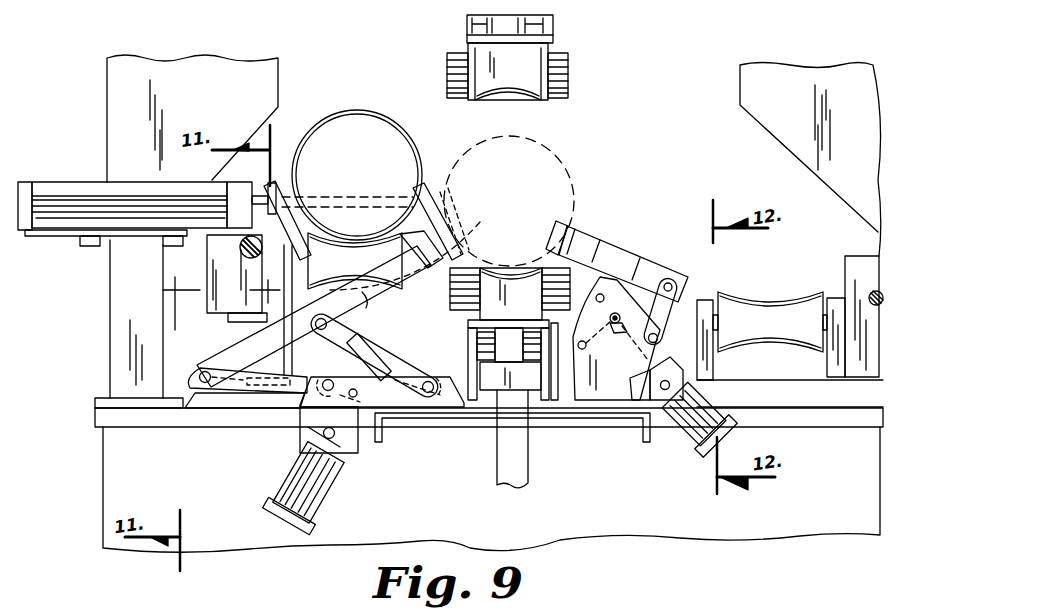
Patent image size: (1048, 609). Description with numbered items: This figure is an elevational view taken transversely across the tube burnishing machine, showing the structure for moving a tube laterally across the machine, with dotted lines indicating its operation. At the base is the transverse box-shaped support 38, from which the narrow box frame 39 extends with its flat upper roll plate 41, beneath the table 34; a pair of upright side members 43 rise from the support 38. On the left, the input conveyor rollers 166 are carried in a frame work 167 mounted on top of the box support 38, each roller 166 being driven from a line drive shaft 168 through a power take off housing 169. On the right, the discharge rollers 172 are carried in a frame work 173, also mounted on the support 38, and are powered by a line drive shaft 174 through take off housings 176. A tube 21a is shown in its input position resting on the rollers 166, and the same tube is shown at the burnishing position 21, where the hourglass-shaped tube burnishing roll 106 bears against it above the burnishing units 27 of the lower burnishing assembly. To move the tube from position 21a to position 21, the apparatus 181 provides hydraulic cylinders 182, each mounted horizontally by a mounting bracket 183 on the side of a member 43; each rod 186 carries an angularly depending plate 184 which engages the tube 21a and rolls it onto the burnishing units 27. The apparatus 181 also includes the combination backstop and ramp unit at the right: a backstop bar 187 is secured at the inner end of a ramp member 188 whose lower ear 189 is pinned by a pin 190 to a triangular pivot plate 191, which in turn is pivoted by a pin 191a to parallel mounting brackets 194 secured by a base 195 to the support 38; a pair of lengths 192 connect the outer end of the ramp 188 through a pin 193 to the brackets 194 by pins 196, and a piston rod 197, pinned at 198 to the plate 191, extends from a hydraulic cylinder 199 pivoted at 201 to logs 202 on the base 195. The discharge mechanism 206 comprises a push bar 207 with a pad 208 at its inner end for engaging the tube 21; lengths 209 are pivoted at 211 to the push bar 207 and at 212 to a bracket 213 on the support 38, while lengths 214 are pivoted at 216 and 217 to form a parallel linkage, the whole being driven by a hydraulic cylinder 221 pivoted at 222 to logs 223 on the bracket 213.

The tube 21 is at (540, 143).
The tube 21a is at (315, 120).
The burnishing units 27 is at (598, 33).
The table 34 is at (380, 432).
The transverse box-shaped support 38 is at (118, 482).
The narrow box frame 39 is at (507, 460).
The upper roll plate 41 is at (493, 380).
The side members 43 is at (107, 103).
The tube burnishing roll 106 is at (507, 88).
The rollers 166 is at (295, 290).
The frame work 167 is at (265, 328).
The line drive shaft 168 is at (240, 247).
The power take off housing 169 is at (227, 263).
The rollers 172 is at (772, 300).
The frame work 173 is at (800, 398).
The line drive shaft 174 is at (850, 270).
The take off housing 176 is at (872, 263).
The apparatus 181 is at (98, 159).
The hydraulic cylinders 182 is at (93, 188).
The mounting bracket 183 is at (92, 238).
The angularly depending plate 184 is at (298, 186).
The rod 186 is at (266, 190).
The backstop bar 187 is at (566, 225).
The ramp member 188 is at (627, 263).
The lower ear 189 is at (640, 268).
The pin 190 is at (598, 277).
The triangular pivot plate 191 is at (583, 290).
The pin 191a is at (561, 408).
The lengths 192 is at (683, 295).
The pin 193 is at (676, 272).
The mounting brackets 194 is at (612, 392).
The base 195 is at (673, 417).
The pins 196 is at (668, 336).
The piston rod 197 is at (640, 392).
The pin 198 is at (617, 337).
The hydraulic cylinder 199 is at (672, 420).
The pivot 201 is at (671, 387).
The logs 202 is at (677, 380).
The mechanism 206 is at (230, 407).
The push bar 207 is at (366, 300).
The pad 208 is at (470, 228).
The lengths 209 is at (357, 346).
The pivot connection 211 is at (320, 331).
The pivot connection 212 is at (432, 380).
The bracket 213 is at (450, 397).
The lengths 214 is at (277, 390).
The pivot connection 216 is at (200, 395).
The pivot connection 217 is at (323, 388).
The hydraulic cylinder 221 is at (293, 480).
The pivot connection 222 is at (334, 440).
The logs 223 is at (355, 440).